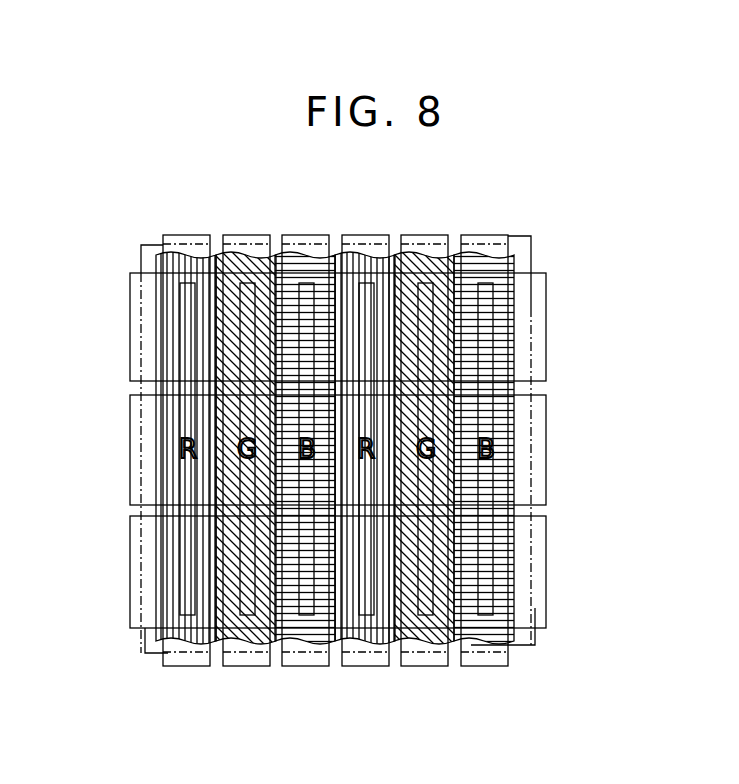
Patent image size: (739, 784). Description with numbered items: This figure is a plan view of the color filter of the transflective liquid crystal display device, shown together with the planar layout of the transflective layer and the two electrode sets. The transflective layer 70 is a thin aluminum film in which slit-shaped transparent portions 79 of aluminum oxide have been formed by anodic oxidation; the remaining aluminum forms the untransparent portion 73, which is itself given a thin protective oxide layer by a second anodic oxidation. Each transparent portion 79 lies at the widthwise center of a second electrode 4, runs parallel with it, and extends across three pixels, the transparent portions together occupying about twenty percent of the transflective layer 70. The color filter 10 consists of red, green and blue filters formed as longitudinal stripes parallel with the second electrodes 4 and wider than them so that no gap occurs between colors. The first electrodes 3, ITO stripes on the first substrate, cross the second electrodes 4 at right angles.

The transflective layer 70 is at (133, 252).
The untransparent portion 73 is at (138, 457).
The transparent portion 79 is at (175, 345).
The first electrode 3 is at (554, 258).
The second electrode 4 is at (387, 417).
The color filter 10 is at (536, 436).